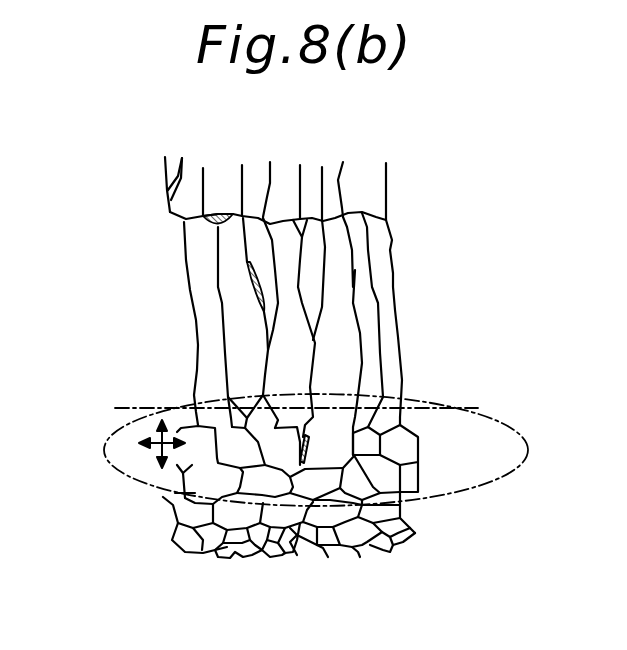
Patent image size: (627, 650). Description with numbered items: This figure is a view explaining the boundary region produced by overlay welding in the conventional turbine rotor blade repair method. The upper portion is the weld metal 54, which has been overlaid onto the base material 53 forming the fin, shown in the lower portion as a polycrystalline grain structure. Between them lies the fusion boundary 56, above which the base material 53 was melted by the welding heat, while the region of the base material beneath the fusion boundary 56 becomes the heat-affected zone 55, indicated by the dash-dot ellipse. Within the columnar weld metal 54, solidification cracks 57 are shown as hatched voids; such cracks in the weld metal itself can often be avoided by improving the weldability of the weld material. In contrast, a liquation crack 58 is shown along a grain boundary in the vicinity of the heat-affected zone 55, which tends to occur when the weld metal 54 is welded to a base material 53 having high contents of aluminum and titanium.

The base material 53 is at (402, 543).
The weld metal 54 is at (380, 187).
The heat-affected zone 55 is at (528, 452).
The fusion boundary 56 is at (143, 407).
The solidification cracks 57 is at (247, 263).
The liquation cracks 58 is at (308, 438).